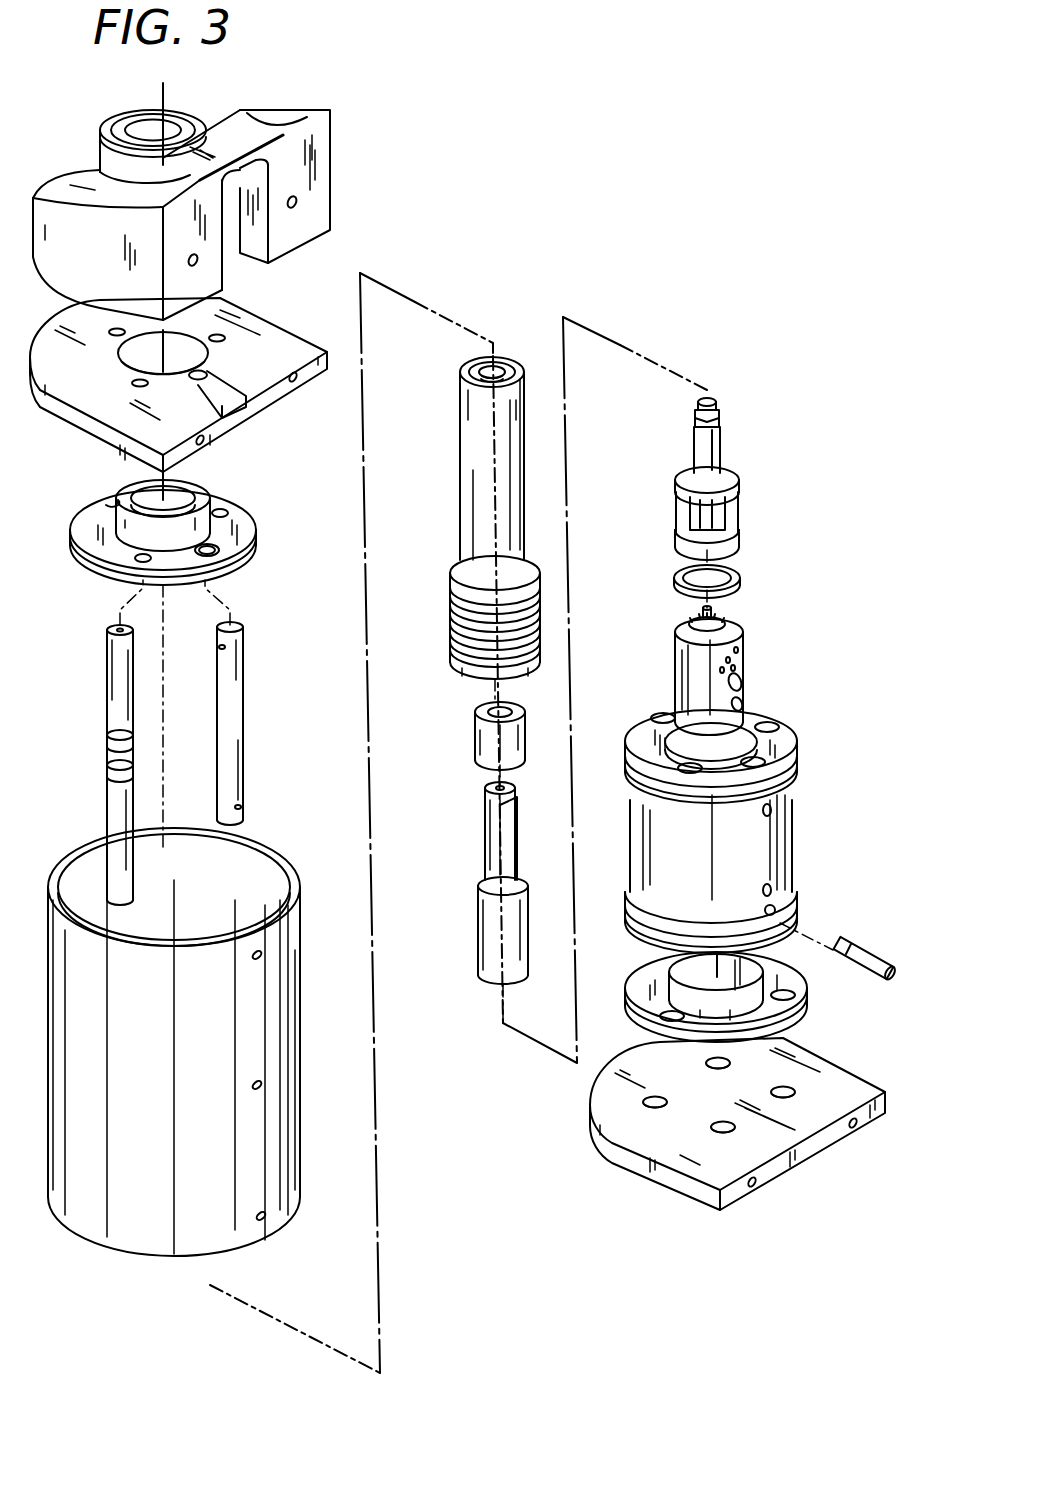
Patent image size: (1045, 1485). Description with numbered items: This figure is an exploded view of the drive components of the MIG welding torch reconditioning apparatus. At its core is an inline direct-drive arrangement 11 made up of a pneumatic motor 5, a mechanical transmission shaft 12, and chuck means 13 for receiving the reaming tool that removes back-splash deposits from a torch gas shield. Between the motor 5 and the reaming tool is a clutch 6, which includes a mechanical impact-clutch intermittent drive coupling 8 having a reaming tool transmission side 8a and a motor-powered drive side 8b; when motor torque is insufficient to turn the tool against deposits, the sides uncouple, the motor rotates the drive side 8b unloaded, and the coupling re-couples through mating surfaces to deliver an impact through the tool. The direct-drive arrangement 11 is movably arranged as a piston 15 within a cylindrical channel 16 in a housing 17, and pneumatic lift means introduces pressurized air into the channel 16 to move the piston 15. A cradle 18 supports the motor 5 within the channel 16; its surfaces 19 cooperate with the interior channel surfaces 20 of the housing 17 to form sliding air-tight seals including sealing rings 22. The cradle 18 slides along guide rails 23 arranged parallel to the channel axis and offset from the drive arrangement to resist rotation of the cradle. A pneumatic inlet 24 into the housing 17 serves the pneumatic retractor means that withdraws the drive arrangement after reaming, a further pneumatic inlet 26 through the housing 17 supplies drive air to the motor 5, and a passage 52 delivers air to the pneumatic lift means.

The pneumatic motor 5 is at (744, 645).
The clutch 6 is at (740, 519).
The mechanical impact-clutch intermittent drive coupling 8 is at (676, 518).
The reaming tool transmission side 8a is at (490, 828).
The motor-powered drive side 8b is at (735, 548).
The direct-drive arrangement 11 is at (740, 524).
The mechanical transmission shaft 12 is at (498, 472).
The chuck means 13 is at (500, 476).
The piston 15 is at (761, 824).
The channel 16 is at (200, 1021).
The housing 17 is at (118, 1083).
The cradle 18 is at (698, 873).
The cradle surfaces 19 is at (780, 760).
The interior channel surfaces 20 is at (238, 888).
The sealing rings 22 is at (790, 790).
The guide rail 23 is at (110, 655).
The pneumatic inlet 24 is at (262, 950).
The pneumatic inlet 26 is at (263, 1083).
The passage 52 is at (266, 1220).